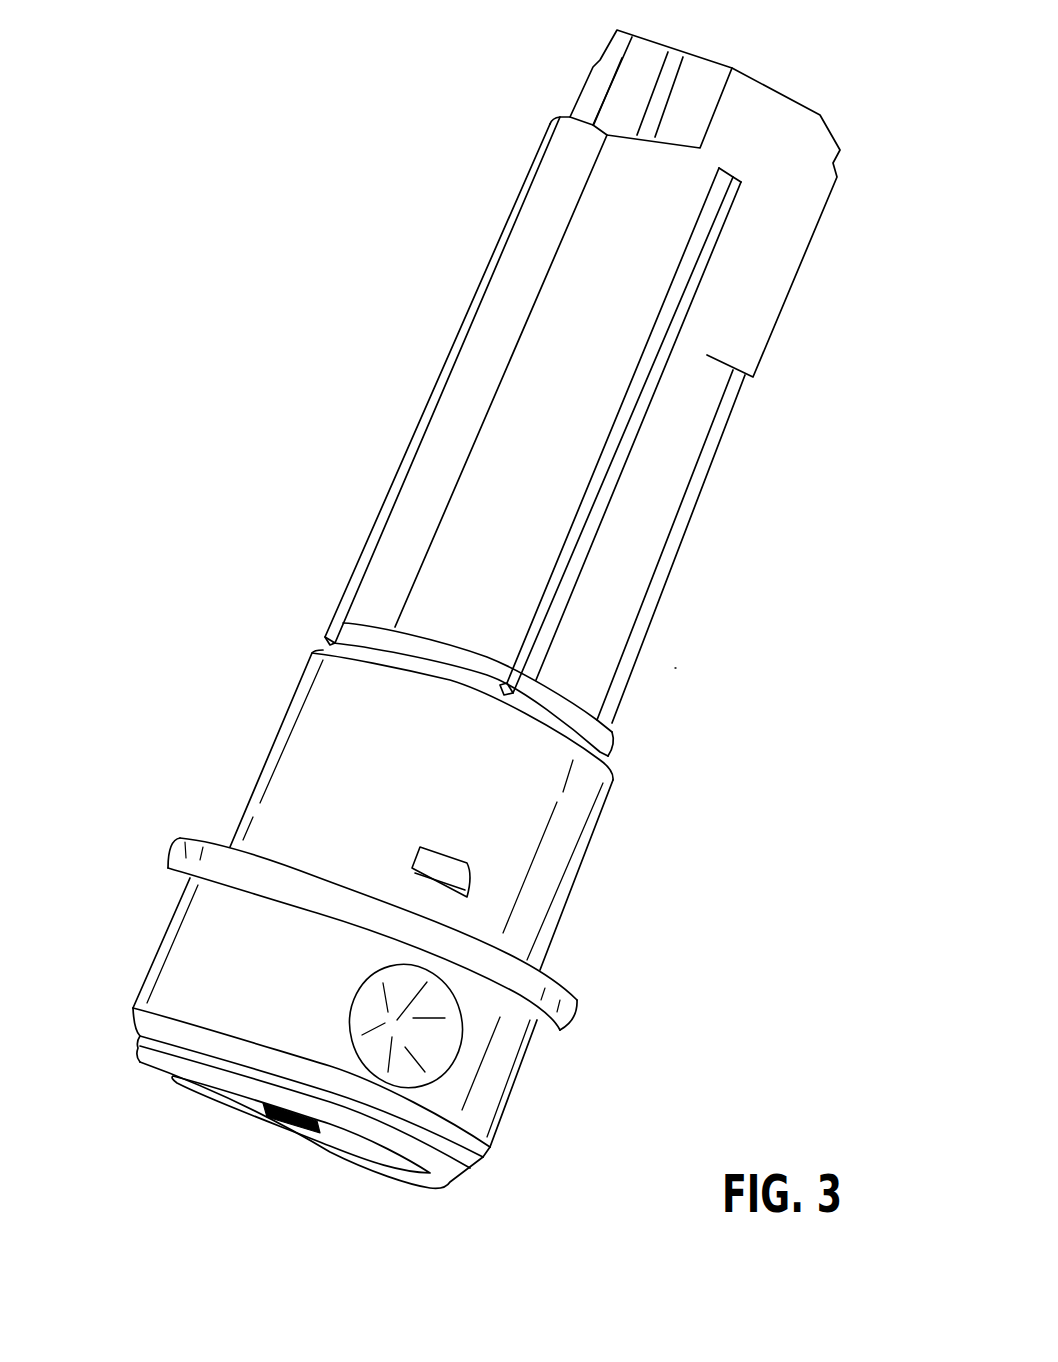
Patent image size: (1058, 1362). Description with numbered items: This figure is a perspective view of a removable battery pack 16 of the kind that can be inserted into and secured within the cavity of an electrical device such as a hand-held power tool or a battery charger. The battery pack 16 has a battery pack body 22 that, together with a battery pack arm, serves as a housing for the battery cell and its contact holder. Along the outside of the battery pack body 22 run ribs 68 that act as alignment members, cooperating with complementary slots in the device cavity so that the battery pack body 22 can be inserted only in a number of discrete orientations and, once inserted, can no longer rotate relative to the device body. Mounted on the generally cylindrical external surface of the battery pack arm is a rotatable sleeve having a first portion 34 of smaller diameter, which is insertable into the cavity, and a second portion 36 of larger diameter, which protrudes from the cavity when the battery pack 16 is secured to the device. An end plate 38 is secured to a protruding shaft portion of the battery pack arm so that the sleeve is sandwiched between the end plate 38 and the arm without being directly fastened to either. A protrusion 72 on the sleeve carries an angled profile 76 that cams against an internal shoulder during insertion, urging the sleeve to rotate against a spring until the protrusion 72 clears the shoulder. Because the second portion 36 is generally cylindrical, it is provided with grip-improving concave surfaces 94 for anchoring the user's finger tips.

The battery pack 16 is at (675, 668).
The battery pack body 22 is at (597, 250).
The first portion 34 is at (322, 745).
The second portion 36 is at (200, 957).
The end plate 38 is at (420, 1178).
The ribs 68 is at (415, 440).
The protrusion 72 is at (470, 887).
The angled profile 76 is at (475, 868).
The concave surfaces 94 is at (427, 1040).